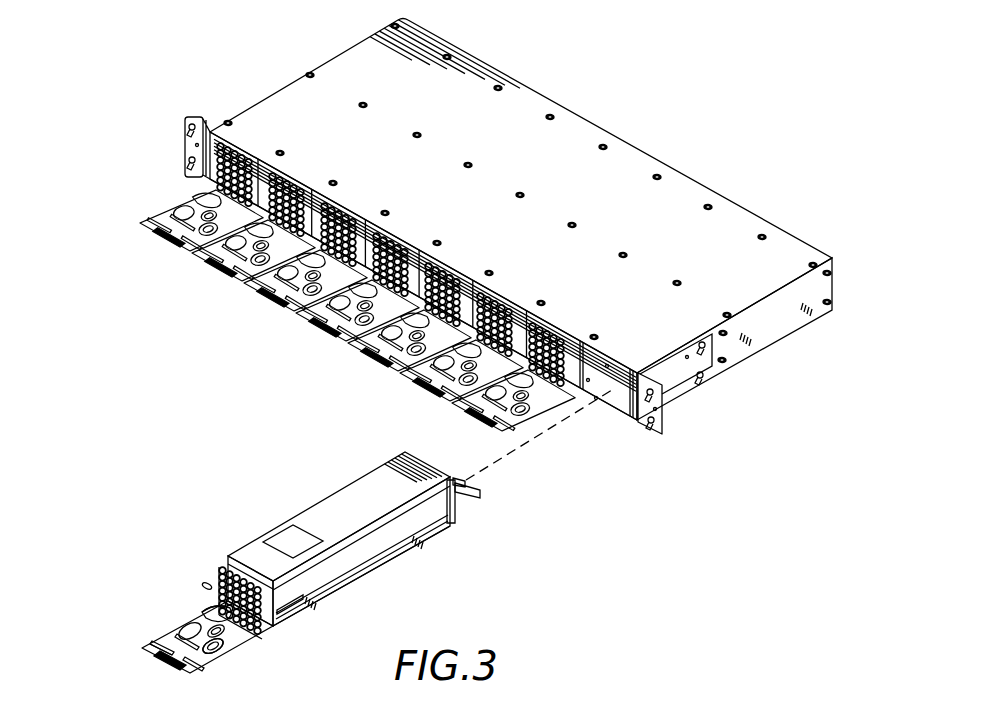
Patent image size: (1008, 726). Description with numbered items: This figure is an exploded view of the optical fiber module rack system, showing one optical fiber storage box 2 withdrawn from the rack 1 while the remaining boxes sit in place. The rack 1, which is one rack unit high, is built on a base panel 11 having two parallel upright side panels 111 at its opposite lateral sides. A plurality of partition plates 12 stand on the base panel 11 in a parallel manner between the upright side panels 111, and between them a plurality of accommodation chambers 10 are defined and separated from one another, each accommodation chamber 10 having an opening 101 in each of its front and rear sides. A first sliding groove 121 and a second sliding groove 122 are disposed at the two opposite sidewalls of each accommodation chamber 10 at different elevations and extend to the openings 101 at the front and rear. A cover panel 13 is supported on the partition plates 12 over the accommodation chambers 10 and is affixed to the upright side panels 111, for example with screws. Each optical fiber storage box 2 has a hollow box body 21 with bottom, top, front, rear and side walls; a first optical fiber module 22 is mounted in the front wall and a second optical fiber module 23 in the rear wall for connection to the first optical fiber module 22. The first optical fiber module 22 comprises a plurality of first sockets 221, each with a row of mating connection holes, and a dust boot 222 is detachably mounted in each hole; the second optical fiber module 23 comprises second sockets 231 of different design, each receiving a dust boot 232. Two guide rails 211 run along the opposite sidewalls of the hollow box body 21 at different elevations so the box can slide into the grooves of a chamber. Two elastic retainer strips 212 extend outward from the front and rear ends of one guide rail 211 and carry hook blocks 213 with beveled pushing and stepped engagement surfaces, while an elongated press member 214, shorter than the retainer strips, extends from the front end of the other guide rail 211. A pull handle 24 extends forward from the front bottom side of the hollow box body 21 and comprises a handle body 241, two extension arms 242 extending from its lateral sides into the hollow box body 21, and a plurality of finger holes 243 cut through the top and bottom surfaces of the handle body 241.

The rack 1 is at (482, 250).
The accommodation chamber 10 is at (617, 384).
The opening 101 is at (623, 417).
The base panel 11 is at (618, 404).
The upright side panel 111 is at (757, 346).
The partition plate 12 is at (582, 367).
The first sliding groove 121 is at (635, 423).
The second sliding groove 122 is at (600, 352).
The cover panel 13 is at (741, 212).
The optical fiber storage box 2 is at (305, 572).
The hollow box body 21 is at (331, 497).
The guide rail 211 is at (334, 577).
The elastic retainer strip 212 is at (262, 617).
The hook block 213 is at (278, 614).
The elongated press member 214 is at (212, 583).
The first optical fiber module 22 is at (205, 573).
The first socket 221 is at (245, 571).
The dust boot 222 is at (219, 580).
The second optical fiber module 23 is at (492, 532).
The second socket 231 is at (451, 504).
The dust boot 232 is at (490, 501).
The pull handle 24 is at (171, 633).
The handle body 241 is at (169, 632).
The extension arm 242 is at (212, 608).
The finger hole 243 is at (218, 648).